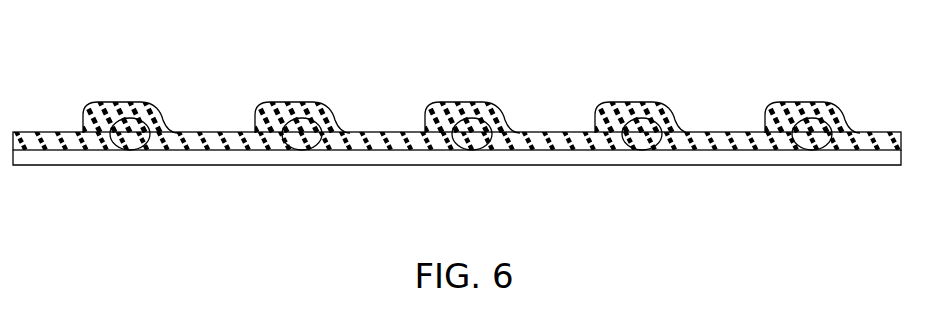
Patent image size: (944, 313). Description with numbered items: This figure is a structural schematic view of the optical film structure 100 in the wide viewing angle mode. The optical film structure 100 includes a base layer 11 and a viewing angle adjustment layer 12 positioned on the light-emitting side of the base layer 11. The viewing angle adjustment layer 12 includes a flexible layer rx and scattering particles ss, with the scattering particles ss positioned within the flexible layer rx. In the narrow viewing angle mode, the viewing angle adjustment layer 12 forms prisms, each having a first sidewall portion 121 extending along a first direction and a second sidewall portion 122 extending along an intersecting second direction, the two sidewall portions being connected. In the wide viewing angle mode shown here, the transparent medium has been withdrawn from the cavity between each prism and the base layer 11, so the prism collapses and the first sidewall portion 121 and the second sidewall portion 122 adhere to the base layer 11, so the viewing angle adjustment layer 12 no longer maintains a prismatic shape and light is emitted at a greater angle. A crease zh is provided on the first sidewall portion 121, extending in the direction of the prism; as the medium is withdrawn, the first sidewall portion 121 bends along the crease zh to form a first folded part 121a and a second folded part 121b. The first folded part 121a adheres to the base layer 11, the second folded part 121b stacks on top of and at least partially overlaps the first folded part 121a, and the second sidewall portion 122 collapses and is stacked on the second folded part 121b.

The optical film structure 100 is at (867, 43).
The base layer 11 is at (103, 159).
The viewing angle adjustment layer 12 is at (457, 119).
The flexible layer rx is at (203, 133).
The scattering particles ss is at (237, 133).
The crease zh is at (463, 143).
The first sidewall portion 121 is at (478, 161).
The first folded part 121a is at (587, 134).
The second folded part 121b is at (633, 137).
The second sidewall portion 122 is at (318, 121).